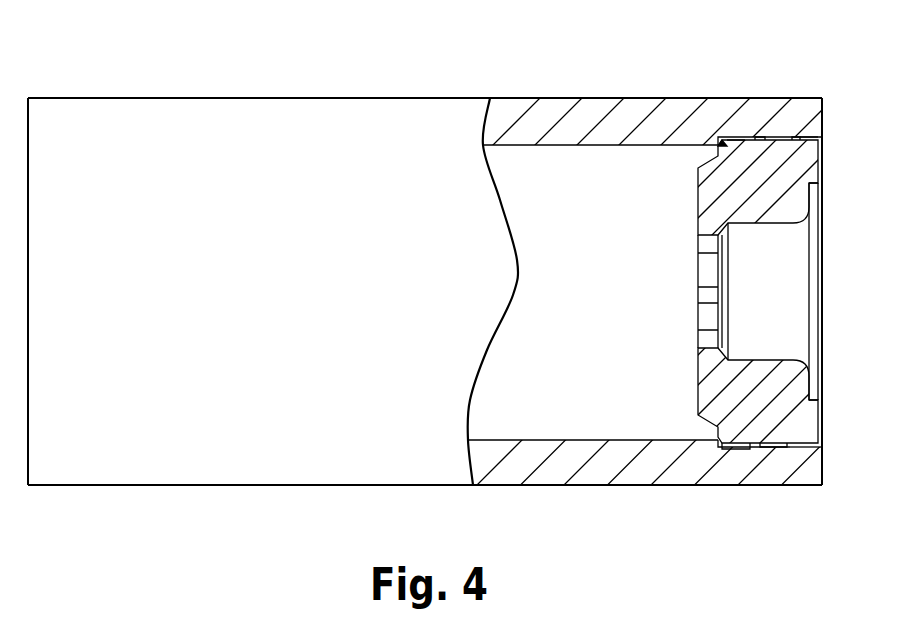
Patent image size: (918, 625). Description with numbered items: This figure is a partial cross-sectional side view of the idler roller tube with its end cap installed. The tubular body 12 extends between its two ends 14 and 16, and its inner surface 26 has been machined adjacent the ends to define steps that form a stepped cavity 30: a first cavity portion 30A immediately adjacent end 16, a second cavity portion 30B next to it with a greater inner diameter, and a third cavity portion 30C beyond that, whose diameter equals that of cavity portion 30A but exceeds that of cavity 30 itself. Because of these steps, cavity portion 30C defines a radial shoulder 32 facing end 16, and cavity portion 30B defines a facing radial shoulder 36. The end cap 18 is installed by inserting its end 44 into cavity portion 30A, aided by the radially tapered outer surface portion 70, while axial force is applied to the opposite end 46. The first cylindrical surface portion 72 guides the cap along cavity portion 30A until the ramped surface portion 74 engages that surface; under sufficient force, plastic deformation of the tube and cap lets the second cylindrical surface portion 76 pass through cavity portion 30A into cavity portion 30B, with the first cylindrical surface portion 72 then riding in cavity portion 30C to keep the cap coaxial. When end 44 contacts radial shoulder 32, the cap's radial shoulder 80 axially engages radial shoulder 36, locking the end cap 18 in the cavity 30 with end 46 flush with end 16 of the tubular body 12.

The tubular body 12 is at (397, 97).
The end 14 is at (28, 110).
The end 16 is at (824, 115).
The end cap 18 is at (809, 425).
The inner surface 26 is at (623, 430).
The cavity 30 is at (537, 184).
The first cavity portion 30A is at (807, 452).
The second cavity portion 30B is at (772, 452).
The third cavity portion 30C is at (737, 448).
The radial shoulder 32 is at (808, 384).
The radial shoulder 36 is at (787, 443).
The end 44 is at (700, 140).
The end 46 is at (823, 150).
The radially tapered outer surface portion 70 is at (697, 150).
The first cylindrical surface portion 72 is at (743, 137).
The ramped surface portion 74 is at (757, 136).
The second cylindrical surface portion 76 is at (777, 135).
The radial shoulder 80 is at (822, 133).